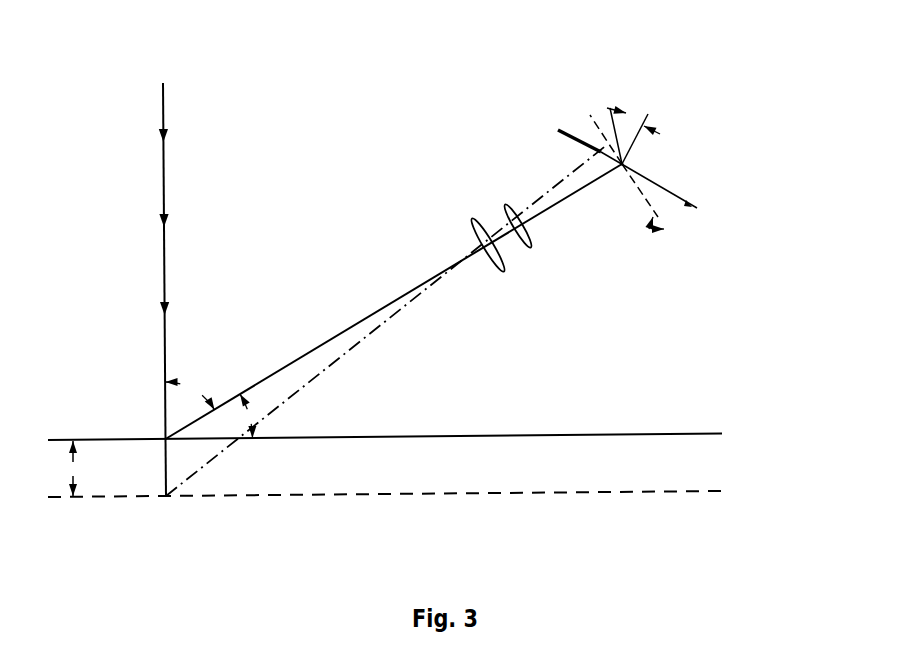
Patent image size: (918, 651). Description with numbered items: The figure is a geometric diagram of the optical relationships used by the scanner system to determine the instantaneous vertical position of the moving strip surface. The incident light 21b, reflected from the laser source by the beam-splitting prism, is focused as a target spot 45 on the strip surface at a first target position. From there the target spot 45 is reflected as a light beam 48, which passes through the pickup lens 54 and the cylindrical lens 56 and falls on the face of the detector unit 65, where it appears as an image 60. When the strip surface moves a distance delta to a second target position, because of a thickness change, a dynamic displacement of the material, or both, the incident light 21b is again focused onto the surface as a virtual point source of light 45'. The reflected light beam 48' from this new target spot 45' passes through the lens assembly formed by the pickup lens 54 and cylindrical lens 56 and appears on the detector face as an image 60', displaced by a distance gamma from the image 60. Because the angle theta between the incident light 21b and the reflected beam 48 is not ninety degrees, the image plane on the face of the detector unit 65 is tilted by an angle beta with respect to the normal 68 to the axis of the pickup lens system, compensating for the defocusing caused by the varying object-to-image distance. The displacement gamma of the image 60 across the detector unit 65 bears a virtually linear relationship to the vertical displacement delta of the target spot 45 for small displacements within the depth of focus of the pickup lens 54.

The incident light 21b is at (164, 176).
The target spot 45 is at (432, 430).
The virtual point source of light 45' is at (435, 475).
The reflected light beam 48 is at (394, 301).
The reflected light beam 48' is at (387, 320).
The pickup lens 54 is at (471, 226).
The cylindrical lens 56 is at (538, 251).
The image 60 is at (637, 155).
The image 60' is at (579, 156).
The detector unit 65 is at (568, 128).
The normal 68 is at (635, 177).